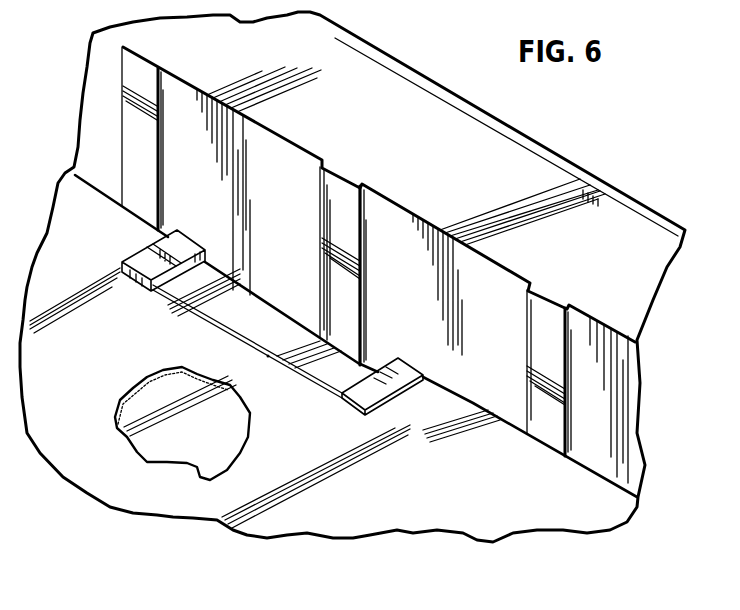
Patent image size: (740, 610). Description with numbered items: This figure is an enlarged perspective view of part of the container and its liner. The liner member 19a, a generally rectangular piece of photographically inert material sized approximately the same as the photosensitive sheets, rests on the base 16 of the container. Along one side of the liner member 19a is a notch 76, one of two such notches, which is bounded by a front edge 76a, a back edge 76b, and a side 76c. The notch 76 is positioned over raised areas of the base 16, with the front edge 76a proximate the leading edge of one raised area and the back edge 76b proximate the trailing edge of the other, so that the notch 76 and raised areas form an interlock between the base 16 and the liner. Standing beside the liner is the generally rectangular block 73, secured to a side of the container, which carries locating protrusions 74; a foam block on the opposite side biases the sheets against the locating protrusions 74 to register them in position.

The block 73 is at (398, 151).
The locating protrusions 74 is at (350, 250).
The notch 76 is at (238, 336).
The front edge 76a is at (120, 265).
The back edge 76b is at (383, 403).
The side 76c is at (217, 324).
The liner member 19a is at (100, 385).
The base 16 is at (202, 442).